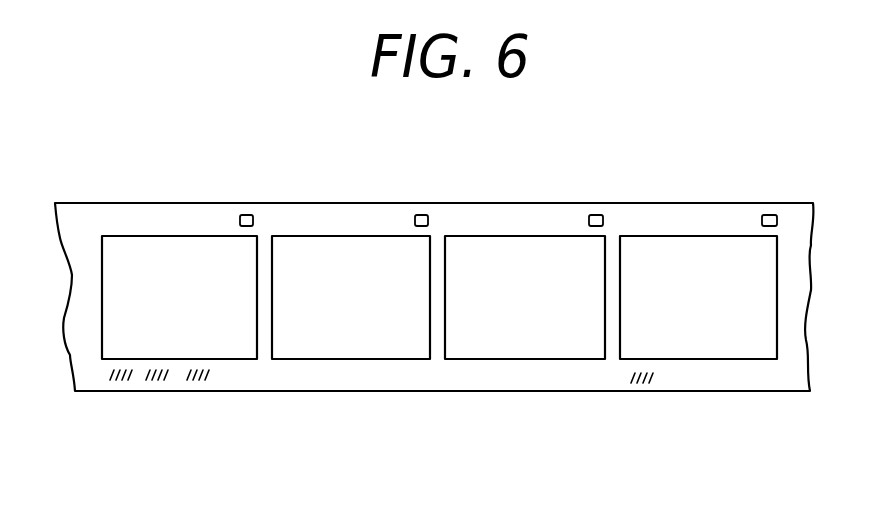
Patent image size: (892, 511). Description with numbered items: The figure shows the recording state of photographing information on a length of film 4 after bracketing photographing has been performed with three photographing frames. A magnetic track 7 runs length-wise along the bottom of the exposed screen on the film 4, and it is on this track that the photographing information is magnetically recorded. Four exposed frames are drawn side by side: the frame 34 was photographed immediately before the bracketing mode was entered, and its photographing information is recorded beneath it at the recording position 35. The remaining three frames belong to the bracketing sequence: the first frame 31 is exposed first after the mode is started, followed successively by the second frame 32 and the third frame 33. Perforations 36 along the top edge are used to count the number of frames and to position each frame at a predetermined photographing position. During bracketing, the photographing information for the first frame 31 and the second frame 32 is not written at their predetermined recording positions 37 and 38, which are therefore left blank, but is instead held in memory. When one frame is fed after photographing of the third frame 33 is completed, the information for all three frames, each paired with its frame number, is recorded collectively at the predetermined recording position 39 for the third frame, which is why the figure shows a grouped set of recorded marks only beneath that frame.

The film 4 is at (80, 212).
The magnetic track 7 is at (745, 383).
The first frame 31 is at (537, 248).
The second frame 32 is at (362, 248).
The third frame 33 is at (195, 245).
The frame 34 is at (695, 250).
The recording position 35 is at (656, 386).
The perforation 36 is at (770, 222).
The recording position 37 is at (476, 380).
The recording position 38 is at (305, 377).
The recording position 39 is at (100, 388).